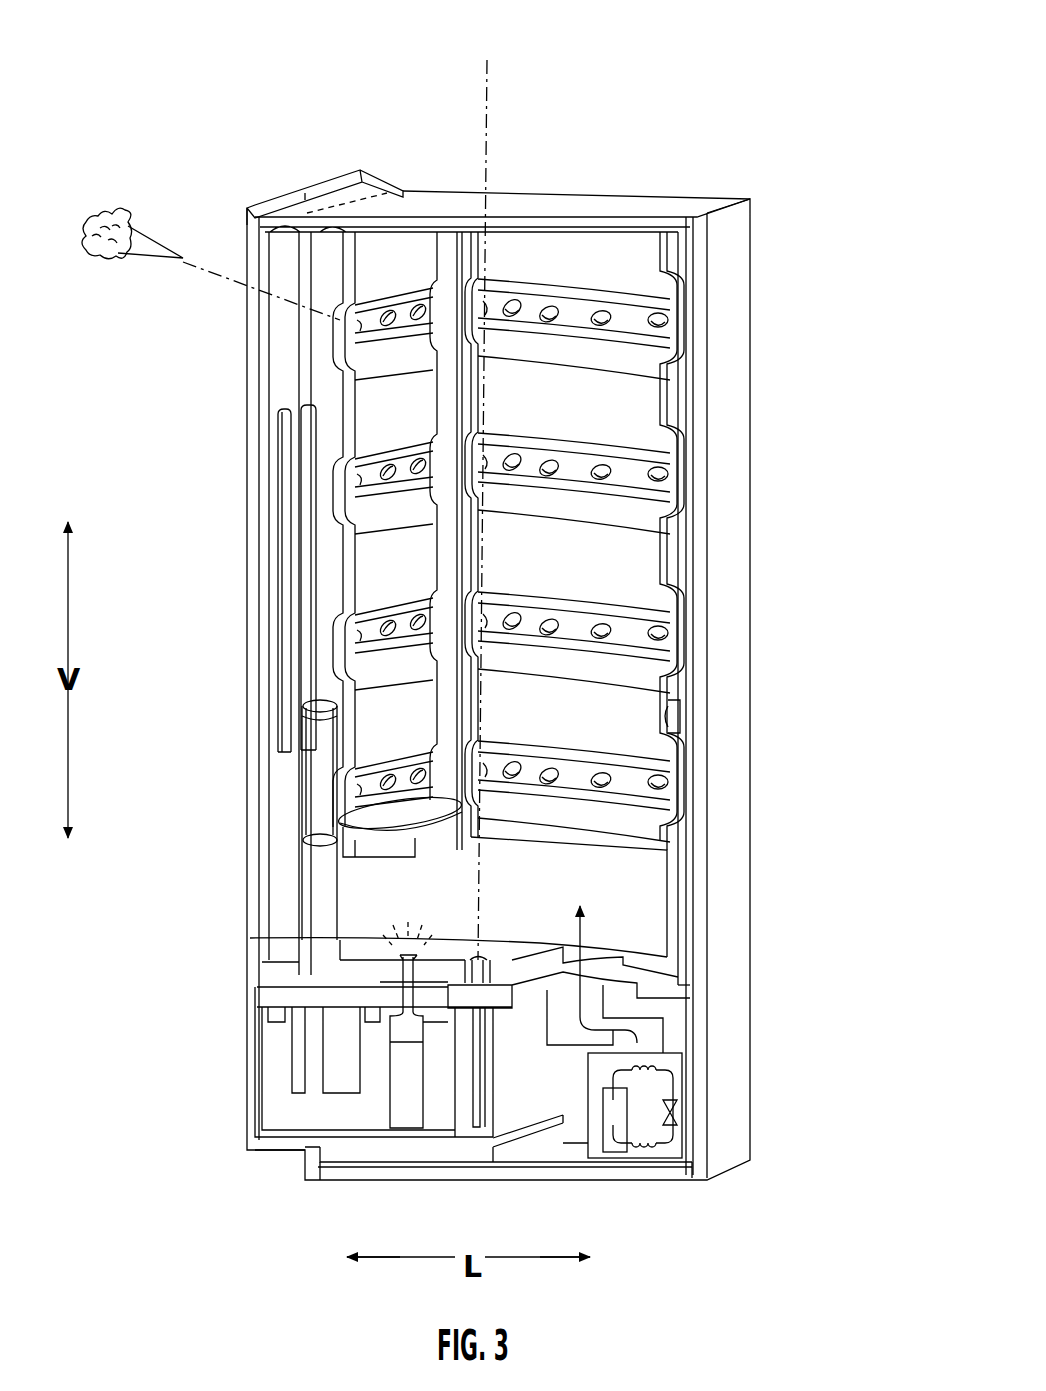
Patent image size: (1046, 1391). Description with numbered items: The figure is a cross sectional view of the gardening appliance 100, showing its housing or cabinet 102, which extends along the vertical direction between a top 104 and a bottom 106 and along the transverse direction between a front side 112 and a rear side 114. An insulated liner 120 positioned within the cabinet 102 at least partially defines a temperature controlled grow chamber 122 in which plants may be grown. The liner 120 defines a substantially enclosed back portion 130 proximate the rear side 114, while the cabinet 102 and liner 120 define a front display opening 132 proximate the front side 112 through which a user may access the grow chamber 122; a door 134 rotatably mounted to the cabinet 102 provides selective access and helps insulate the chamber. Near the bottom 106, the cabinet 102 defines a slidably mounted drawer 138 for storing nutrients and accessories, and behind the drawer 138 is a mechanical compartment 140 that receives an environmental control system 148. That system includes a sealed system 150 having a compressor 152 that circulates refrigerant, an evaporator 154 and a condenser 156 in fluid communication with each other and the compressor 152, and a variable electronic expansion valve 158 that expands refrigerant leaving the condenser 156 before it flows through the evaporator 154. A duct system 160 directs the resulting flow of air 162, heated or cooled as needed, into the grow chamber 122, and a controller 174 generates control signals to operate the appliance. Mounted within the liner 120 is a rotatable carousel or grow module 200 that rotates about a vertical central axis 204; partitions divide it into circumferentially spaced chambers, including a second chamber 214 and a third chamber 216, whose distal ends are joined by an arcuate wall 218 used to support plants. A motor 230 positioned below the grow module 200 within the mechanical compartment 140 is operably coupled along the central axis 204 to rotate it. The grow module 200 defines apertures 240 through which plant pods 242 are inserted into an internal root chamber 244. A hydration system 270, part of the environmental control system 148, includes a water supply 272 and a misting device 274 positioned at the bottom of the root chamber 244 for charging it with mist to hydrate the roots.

The gardening appliance 100 is at (808, 86).
The cabinet 102 is at (742, 333).
The top 104 is at (587, 245).
The bottom 106 is at (367, 1184).
The front side 112 is at (360, 168).
The rear side 114 is at (742, 512).
The insulated liner 120 is at (710, 240).
The grow chamber 122 is at (620, 255).
The enclosed back portion 130 is at (700, 633).
The front display opening 132 is at (322, 776).
The door 134 is at (242, 300).
The drawer 138 is at (248, 1080).
The mechanical compartment 140 is at (548, 1143).
The environmental control system 148 is at (690, 1101).
The sealed system 150 is at (680, 1126).
The compressor 152 is at (622, 1152).
The evaporator 154 is at (658, 1150).
The condenser 156 is at (654, 1060).
The variable electronic expansion valve 158 is at (682, 1108).
The duct system 160 is at (674, 1022).
The flow of air 162 is at (588, 916).
The controller 174 is at (408, 190).
The grow module 200 is at (541, 268).
The central axis 204 is at (516, 88).
The second chamber 214 is at (680, 583).
The third chamber 216 is at (322, 588).
The arcuate wall 218 is at (645, 415).
The motor 230 is at (460, 1008).
The aperture 240 is at (666, 776).
The plant pod 242 is at (153, 243).
The root chamber 244 is at (445, 467).
The hydration system 270 is at (378, 1150).
The water supply 272 is at (392, 1023).
The misting device 274 is at (400, 938).